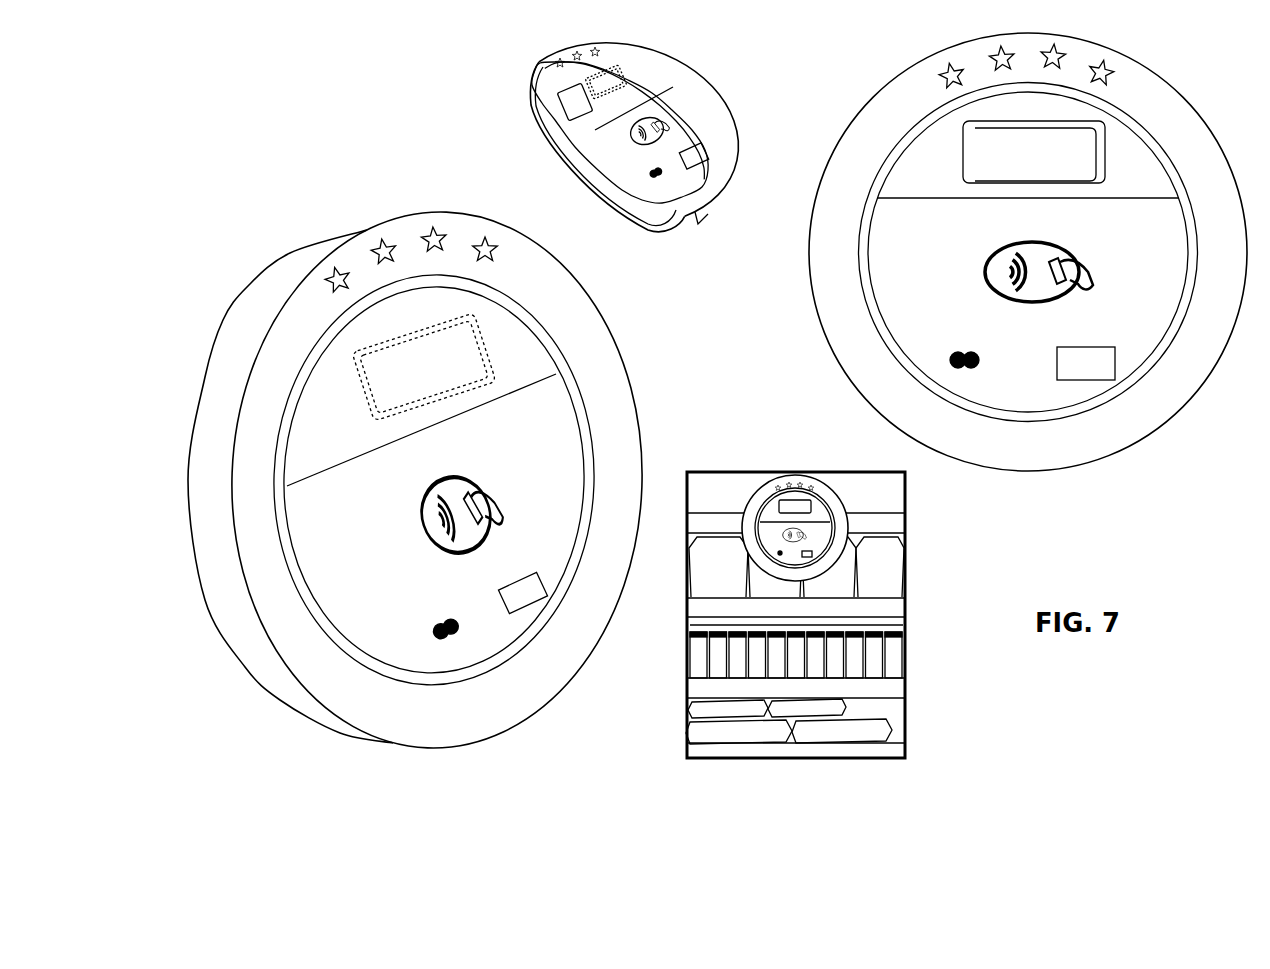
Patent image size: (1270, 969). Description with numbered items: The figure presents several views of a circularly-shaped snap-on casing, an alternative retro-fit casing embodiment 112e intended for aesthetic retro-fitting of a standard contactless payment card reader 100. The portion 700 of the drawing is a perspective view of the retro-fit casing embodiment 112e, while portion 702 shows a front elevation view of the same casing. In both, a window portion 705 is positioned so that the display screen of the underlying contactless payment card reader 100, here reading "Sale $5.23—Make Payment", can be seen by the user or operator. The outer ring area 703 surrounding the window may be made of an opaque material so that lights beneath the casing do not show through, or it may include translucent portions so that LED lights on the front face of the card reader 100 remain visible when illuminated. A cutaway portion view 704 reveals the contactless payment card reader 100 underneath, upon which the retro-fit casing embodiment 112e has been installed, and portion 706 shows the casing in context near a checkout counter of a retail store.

The contactless payment card reader 100 is at (531, 98).
The retro-fit casing embodiment 112e is at (247, 676).
The perspective view portion 700 is at (335, 209).
The front elevation view portion 702 is at (813, 333).
The outer ring area 703 is at (616, 423).
The cutaway portion view 704 is at (717, 85).
The window portion 705 is at (484, 350).
The retail store context portion 706 is at (915, 523).